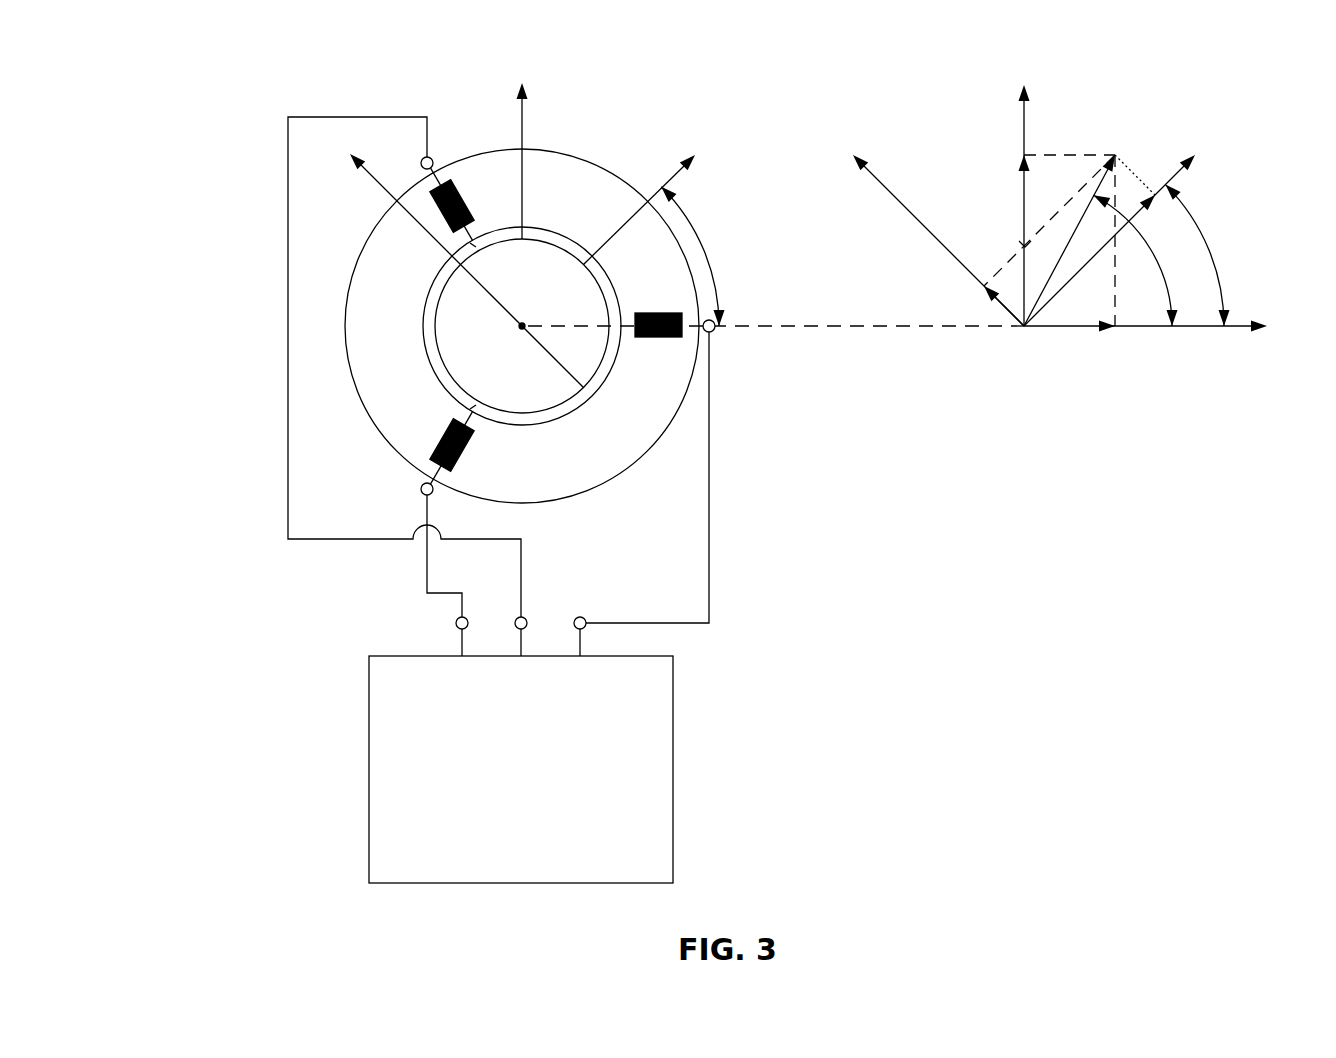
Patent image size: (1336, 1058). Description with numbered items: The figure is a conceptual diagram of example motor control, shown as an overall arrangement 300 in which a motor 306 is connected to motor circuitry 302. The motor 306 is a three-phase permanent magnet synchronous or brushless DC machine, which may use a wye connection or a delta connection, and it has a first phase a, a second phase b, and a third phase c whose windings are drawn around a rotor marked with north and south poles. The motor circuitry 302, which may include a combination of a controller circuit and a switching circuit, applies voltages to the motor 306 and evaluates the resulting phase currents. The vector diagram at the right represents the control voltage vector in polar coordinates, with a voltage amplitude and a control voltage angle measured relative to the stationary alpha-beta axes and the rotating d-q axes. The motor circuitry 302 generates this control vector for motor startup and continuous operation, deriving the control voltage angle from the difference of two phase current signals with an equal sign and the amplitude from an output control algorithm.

The motor system 300 is at (210, 78).
The motor circuitry 302 is at (504, 794).
The motor 306 is at (573, 140).